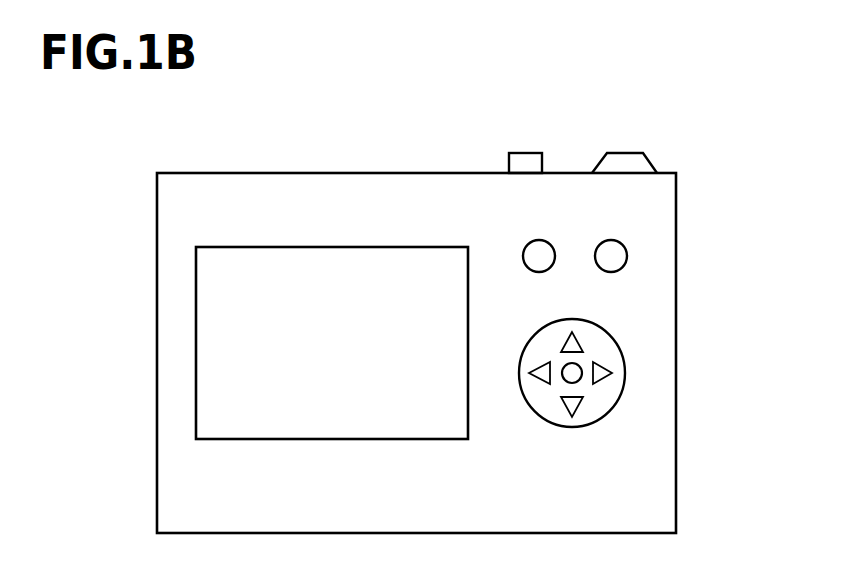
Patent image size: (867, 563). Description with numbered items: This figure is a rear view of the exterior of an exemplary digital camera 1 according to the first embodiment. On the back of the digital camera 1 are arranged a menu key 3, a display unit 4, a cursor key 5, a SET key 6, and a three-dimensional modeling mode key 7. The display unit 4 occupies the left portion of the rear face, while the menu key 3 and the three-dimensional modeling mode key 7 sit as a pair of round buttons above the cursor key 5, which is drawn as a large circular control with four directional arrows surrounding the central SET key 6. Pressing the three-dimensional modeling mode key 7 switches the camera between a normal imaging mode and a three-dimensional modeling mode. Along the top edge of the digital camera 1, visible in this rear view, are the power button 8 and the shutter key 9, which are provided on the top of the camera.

The digital camera 1 is at (700, 146).
The menu key 3 is at (613, 240).
The display unit 4 is at (338, 257).
The cursor key 5 is at (626, 372).
The SET key 6 is at (580, 367).
The 3D modeling mode key 7 is at (540, 240).
The power button 8 is at (525, 153).
The shutter key 9 is at (625, 153).